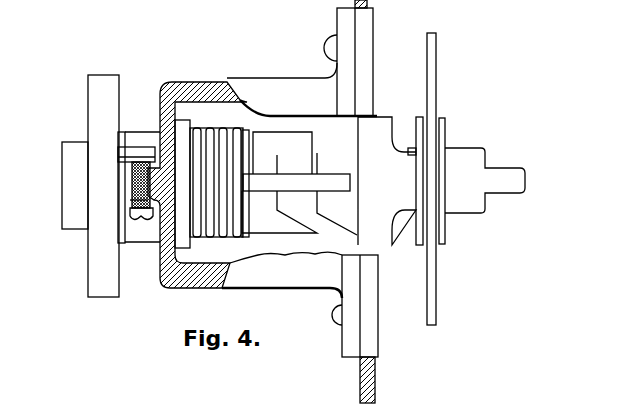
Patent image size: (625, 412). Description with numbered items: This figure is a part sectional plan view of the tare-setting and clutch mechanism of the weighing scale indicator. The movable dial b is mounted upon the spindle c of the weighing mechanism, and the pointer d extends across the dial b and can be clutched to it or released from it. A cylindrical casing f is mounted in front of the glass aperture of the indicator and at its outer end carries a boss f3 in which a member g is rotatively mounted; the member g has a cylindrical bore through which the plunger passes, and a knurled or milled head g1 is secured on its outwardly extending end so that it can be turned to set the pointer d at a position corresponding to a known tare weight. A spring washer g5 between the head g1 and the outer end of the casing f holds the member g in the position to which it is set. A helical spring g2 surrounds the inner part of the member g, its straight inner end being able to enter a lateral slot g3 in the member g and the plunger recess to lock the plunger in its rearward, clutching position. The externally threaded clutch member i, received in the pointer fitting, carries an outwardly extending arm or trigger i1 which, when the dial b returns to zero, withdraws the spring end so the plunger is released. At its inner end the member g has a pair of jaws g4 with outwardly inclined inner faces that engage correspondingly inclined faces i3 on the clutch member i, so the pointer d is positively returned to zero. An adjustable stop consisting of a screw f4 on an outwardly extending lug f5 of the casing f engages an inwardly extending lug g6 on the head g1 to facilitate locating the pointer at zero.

The member g is at (213, 233).
The knurled or milled head g1 is at (97, 110).
The helical spring g2 is at (252, 165).
The lateral slot g3 is at (250, 112).
The jaws g4 is at (317, 153).
The spring washer g5 is at (127, 243).
The inwardly extending lug g6 is at (146, 148).
The cylindrical casing f is at (312, 275).
The boss f3 is at (122, 226).
The screw f4 is at (140, 167).
The outwardly extending lug or projection f5 is at (132, 185).
The clutch member i is at (340, 218).
The outwardly extending arm or trigger i1 is at (283, 185).
The inclined faces i3 is at (278, 155).
The movable dial b is at (437, 50).
The spindle c is at (490, 176).
The pointer d is at (420, 232).